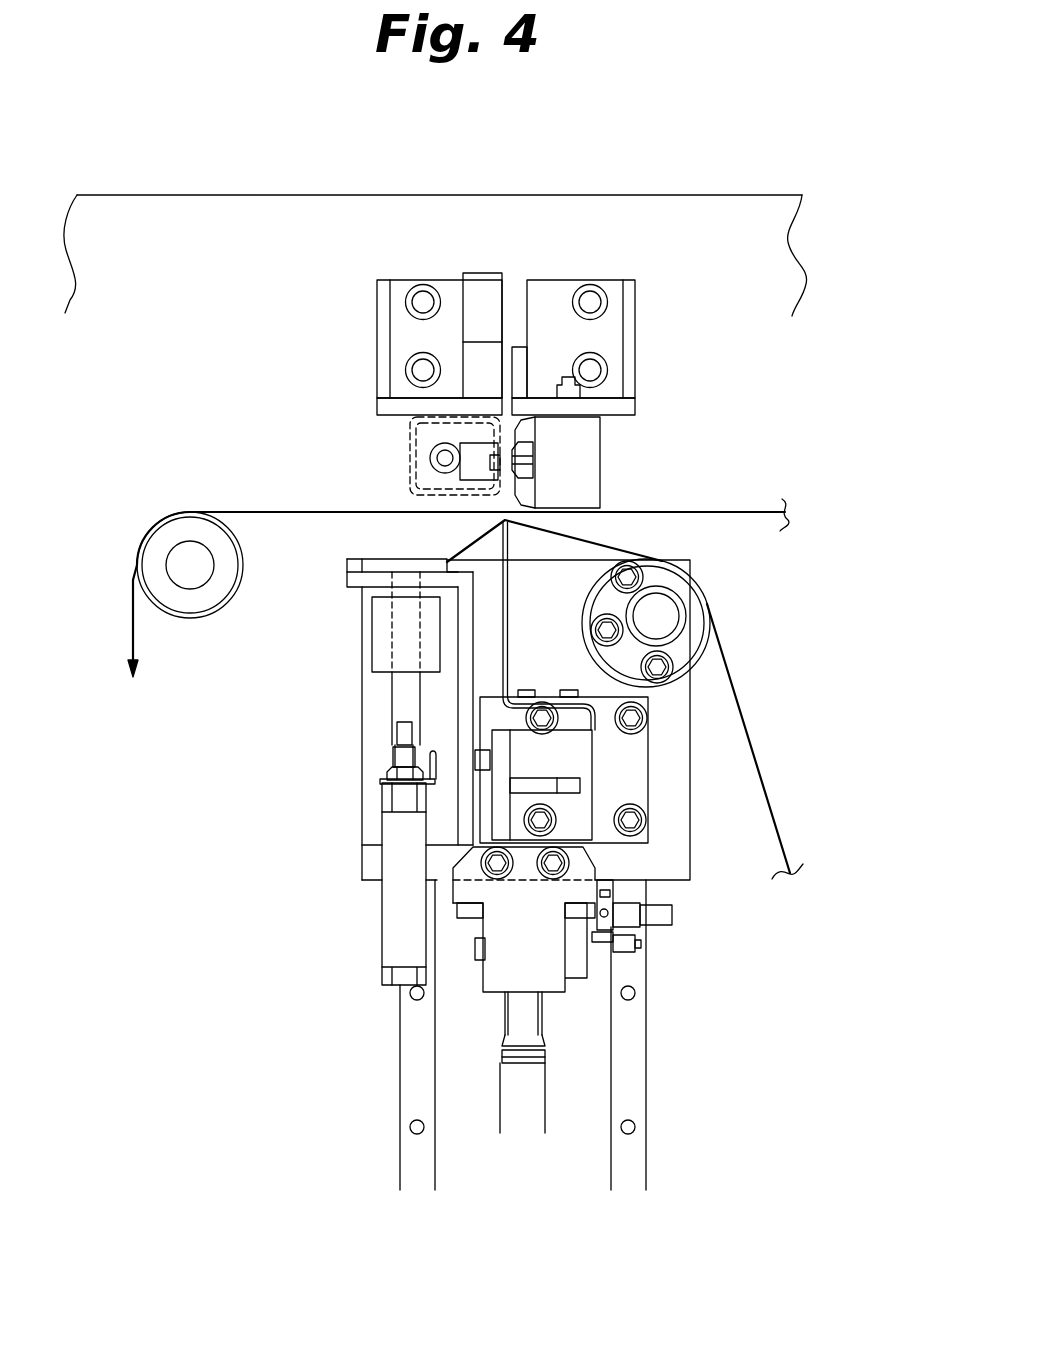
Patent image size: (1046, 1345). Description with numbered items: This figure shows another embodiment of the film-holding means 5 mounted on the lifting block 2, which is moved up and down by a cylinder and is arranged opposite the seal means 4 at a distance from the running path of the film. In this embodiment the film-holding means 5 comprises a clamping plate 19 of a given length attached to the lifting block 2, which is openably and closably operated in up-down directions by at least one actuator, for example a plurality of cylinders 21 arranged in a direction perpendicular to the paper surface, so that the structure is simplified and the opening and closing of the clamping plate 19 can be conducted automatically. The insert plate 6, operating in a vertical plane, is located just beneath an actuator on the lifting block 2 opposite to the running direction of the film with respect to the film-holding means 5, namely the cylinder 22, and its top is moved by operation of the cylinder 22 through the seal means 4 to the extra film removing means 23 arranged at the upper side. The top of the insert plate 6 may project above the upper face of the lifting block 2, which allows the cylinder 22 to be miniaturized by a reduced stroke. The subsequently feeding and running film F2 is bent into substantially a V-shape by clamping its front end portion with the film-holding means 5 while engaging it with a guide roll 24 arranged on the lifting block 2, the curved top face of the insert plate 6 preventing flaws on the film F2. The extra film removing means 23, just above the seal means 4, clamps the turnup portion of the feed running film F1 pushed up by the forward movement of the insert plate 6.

The lifting block 2 is at (360, 752).
The seal means 4 is at (410, 455).
The film-holding means 5 is at (376, 542).
The insert plate 6 is at (510, 637).
The clamping plate 19 is at (372, 560).
The cylinder 21 is at (398, 902).
The cylinder 22 is at (568, 765).
The extra film removing means 23 is at (515, 318).
The guide roll 24 is at (690, 595).
The feed running film F1 is at (693, 512).
The subsequently feeding and running film F2 is at (603, 548).